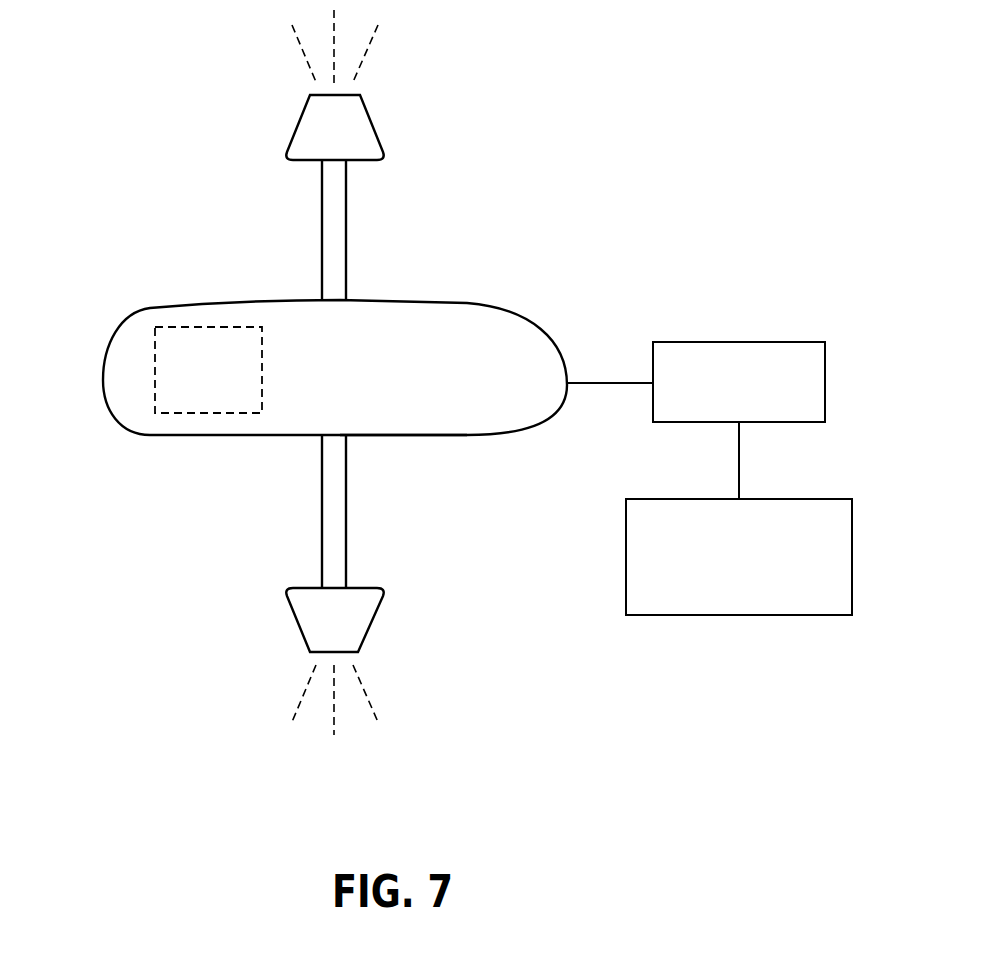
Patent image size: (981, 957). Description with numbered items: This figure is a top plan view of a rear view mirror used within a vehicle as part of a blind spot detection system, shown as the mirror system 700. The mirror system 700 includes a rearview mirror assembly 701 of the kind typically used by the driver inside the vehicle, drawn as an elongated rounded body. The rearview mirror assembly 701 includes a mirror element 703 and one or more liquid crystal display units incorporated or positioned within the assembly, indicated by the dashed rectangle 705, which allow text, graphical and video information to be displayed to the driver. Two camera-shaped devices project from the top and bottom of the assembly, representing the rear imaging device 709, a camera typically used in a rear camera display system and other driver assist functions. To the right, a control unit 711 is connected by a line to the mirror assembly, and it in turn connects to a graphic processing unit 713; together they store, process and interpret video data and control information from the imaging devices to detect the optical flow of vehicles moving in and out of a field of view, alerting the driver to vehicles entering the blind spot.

The mirror system 700 is at (550, 146).
The rearview mirror assembly 701 is at (467, 303).
The mirror element 703 is at (467, 412).
The internal module 705 is at (130, 375).
The rear imaging device 709 is at (297, 121).
The control unit 711 is at (808, 342).
The graphic processing unit 713 is at (835, 498).